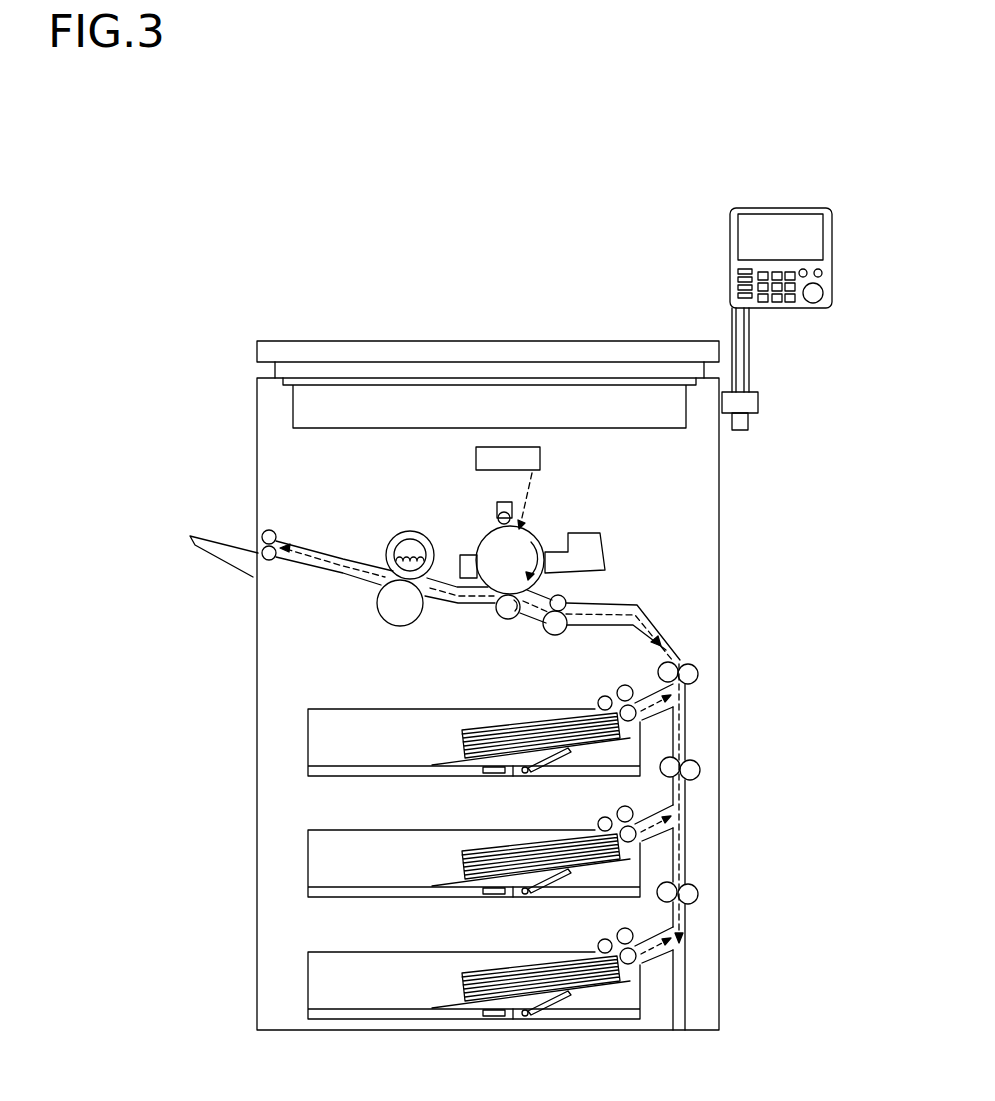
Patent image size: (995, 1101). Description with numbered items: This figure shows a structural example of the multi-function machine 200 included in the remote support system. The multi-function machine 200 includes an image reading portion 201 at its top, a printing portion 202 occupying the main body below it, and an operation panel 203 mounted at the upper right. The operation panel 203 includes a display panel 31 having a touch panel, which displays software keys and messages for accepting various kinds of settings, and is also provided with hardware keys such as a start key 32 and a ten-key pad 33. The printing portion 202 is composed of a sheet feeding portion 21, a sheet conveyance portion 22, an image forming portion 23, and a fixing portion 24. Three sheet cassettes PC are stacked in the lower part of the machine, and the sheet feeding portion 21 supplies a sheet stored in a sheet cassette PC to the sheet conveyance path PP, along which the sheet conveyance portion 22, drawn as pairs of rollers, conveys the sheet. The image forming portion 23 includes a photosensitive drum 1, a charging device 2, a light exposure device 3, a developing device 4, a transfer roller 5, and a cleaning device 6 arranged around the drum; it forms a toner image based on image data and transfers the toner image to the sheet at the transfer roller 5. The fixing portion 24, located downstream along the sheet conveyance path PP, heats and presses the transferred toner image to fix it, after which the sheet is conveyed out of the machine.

The multi-function machine 200 is at (258, 321).
The image reading portion 201 is at (698, 431).
The printing portion 202 is at (698, 555).
The operation panel 203 is at (763, 295).
The display panel 31 is at (772, 220).
The start key 32 is at (813, 303).
The ten-key pad 33 is at (775, 300).
The photosensitive drum 1 is at (492, 538).
The charging device 2 is at (500, 503).
The light exposure device 3 is at (480, 462).
The developing device 4 is at (594, 543).
The transfer roller 5 is at (503, 613).
The cleaning device 6 is at (463, 554).
The image forming portion 23 is at (534, 554).
The fixing portion 24 is at (363, 604).
The sheet feeding portion 21 is at (578, 697).
The sheet conveyance portion 22 is at (280, 516).
The sheet cassette PC is at (337, 709).
The sheet conveyance path PP is at (662, 633).